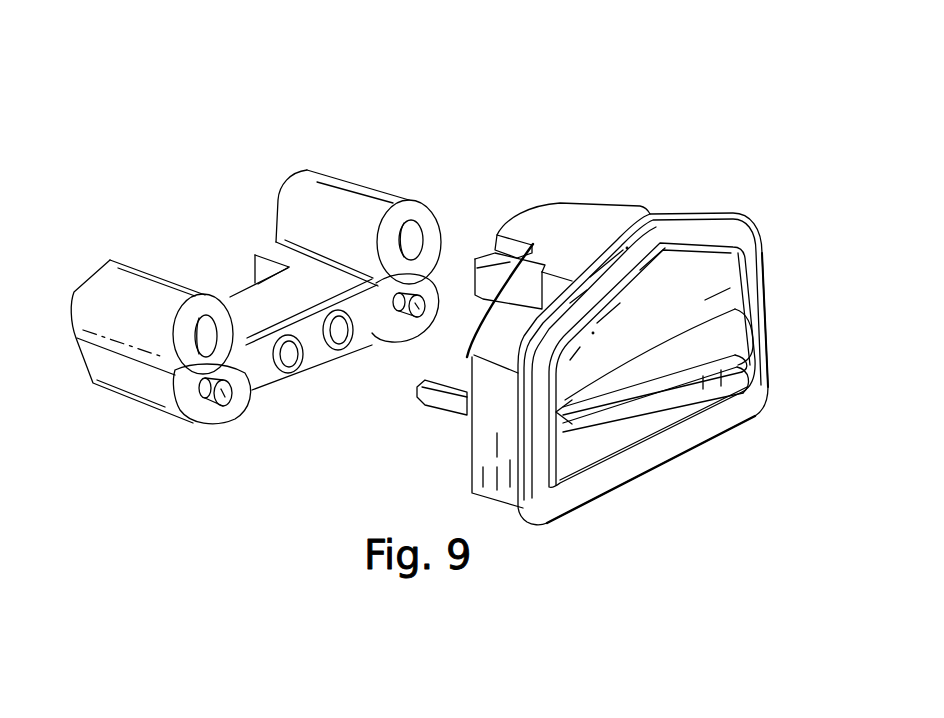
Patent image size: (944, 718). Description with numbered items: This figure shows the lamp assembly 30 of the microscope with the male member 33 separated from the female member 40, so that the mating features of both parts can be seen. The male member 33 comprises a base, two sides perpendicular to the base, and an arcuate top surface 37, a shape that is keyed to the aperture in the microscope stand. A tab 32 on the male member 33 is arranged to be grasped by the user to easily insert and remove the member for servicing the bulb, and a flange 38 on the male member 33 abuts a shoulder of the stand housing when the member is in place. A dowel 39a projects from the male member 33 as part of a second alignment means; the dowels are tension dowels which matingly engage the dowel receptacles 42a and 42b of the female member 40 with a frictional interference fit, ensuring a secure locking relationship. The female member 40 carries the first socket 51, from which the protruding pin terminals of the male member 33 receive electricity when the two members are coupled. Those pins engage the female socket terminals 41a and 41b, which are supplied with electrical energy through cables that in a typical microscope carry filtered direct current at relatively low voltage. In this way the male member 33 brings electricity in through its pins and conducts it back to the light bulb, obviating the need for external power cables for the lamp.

The lamp assembly 30 is at (664, 97).
The tab 32 is at (717, 358).
The male member 33 is at (700, 278).
The arcuate top surface 37 is at (560, 218).
The flange 38 is at (664, 213).
The dowel 39a is at (432, 400).
The female member 40 is at (387, 183).
The female socket terminal 41a is at (288, 360).
The female socket terminal 41b is at (342, 350).
The dowel receptacle 42a is at (207, 335).
The dowel receptacle 42b is at (409, 238).
The first socket 51 is at (260, 294).